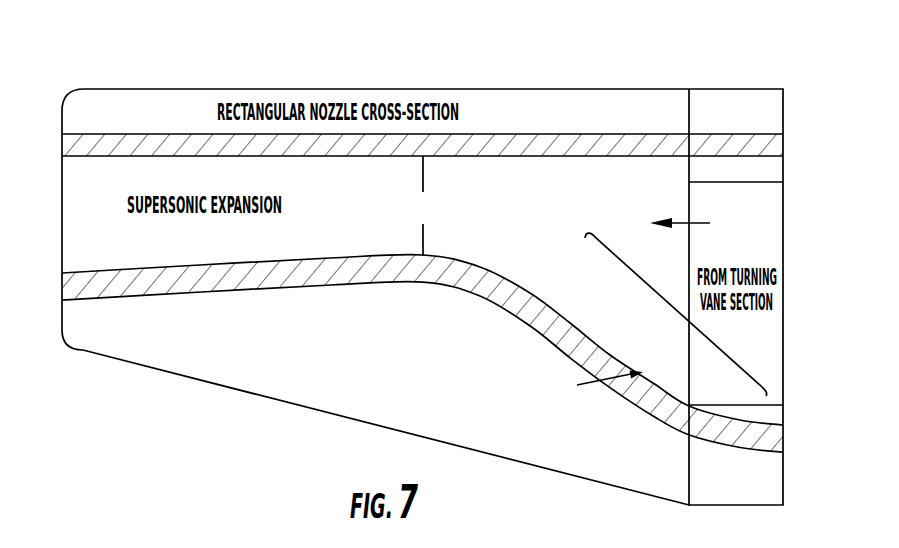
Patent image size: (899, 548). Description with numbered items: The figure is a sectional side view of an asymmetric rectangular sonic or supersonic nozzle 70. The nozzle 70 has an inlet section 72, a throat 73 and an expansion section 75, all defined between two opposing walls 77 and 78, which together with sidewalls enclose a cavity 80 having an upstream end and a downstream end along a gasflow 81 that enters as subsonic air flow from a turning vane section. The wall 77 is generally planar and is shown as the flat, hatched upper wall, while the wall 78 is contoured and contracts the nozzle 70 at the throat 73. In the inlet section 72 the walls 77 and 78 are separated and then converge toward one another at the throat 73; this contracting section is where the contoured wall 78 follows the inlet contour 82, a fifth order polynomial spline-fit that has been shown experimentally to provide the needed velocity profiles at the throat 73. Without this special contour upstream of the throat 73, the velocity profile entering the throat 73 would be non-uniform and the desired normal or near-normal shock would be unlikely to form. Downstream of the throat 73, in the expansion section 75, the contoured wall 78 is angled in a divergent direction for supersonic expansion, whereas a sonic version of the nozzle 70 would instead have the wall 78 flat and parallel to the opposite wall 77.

The asymmetric rectangular supersonic nozzle 70 is at (604, 104).
The inlet section 72 is at (659, 134).
The throat 73 is at (475, 127).
The expansion section 75 is at (196, 128).
The wall 77 is at (552, 140).
The contoured wall 78 is at (432, 284).
The cavity 80 is at (530, 189).
The gasflow 81 is at (680, 222).
The inlet contour 82 is at (641, 266).